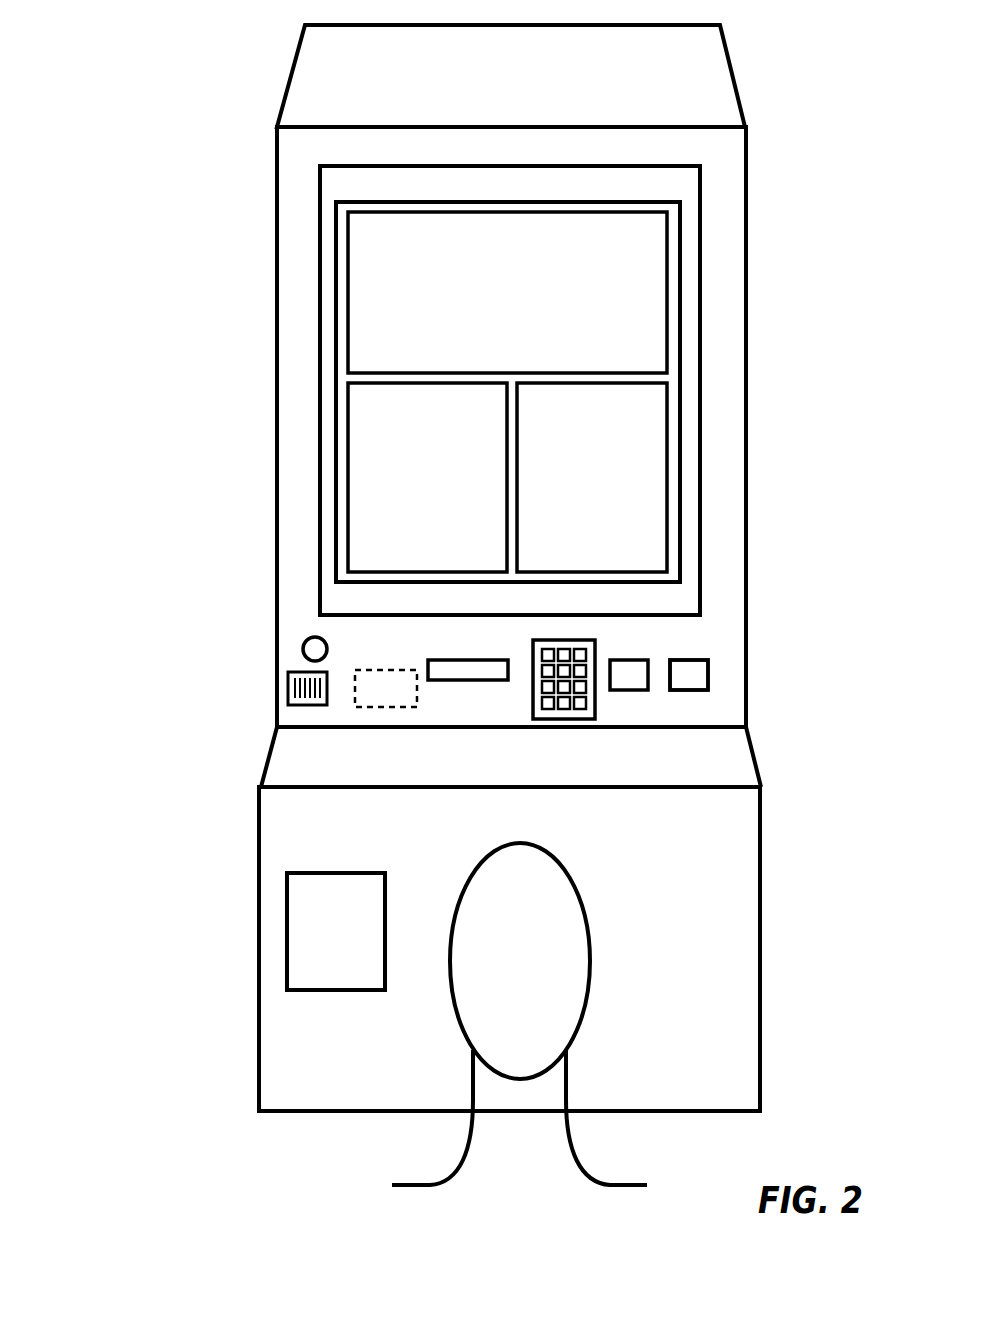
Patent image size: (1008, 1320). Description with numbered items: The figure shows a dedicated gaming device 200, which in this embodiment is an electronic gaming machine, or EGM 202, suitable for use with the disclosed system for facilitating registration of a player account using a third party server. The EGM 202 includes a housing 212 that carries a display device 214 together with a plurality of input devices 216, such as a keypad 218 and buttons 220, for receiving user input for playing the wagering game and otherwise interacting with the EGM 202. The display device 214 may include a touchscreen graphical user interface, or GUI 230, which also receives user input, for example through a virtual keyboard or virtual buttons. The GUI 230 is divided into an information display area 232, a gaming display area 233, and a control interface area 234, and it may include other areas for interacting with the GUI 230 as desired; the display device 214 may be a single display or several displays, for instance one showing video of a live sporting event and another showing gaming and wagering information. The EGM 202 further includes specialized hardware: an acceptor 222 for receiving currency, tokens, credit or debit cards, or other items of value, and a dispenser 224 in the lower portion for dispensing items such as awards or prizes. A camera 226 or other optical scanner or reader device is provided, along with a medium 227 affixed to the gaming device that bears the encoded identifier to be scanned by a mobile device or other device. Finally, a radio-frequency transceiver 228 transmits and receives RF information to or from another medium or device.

The dedicated gaming device 200 is at (150, 167).
The EGM 202 is at (203, 250).
The housing 212 is at (279, 345).
The display device 214 is at (318, 373).
The input devices 216 is at (595, 697).
The keypad 218 is at (595, 705).
The buttons 220 is at (685, 660).
The acceptor 222 is at (428, 668).
The dispenser 224 is at (285, 913).
The camera 226 is at (313, 650).
The medium 227 is at (290, 684).
The radio-frequency transceiver 228 is at (365, 697).
The touchscreen graphical user interface 230 is at (672, 463).
The information display area 232 is at (637, 430).
The gaming display area 233 is at (388, 283).
The control interface area 234 is at (363, 453).